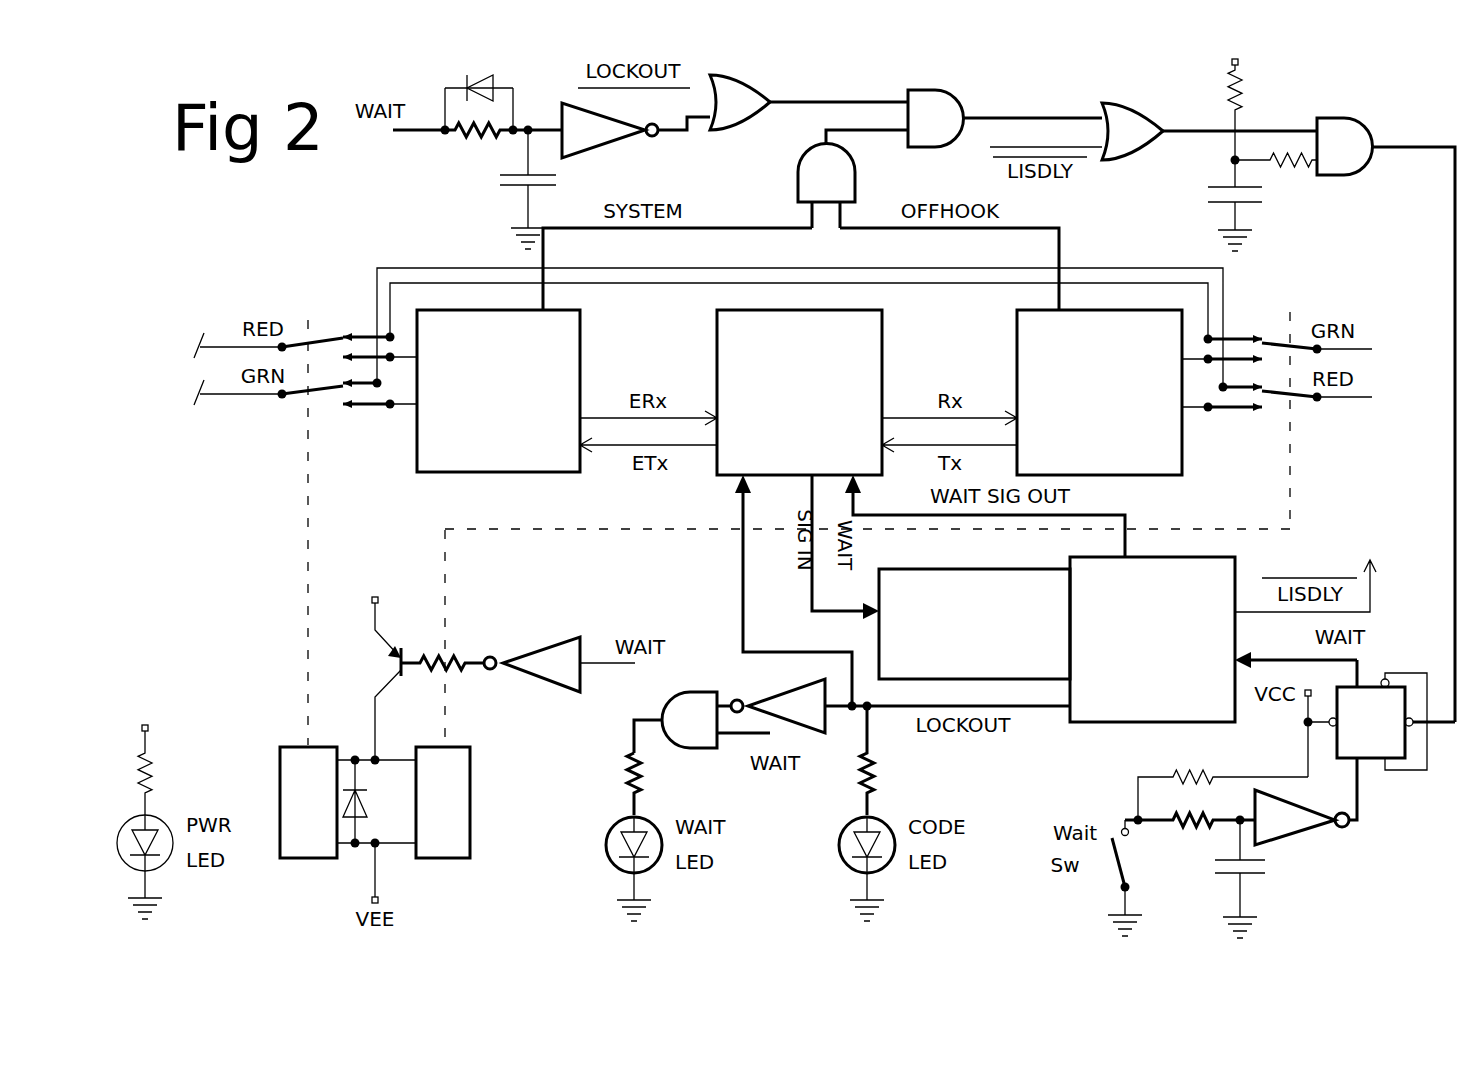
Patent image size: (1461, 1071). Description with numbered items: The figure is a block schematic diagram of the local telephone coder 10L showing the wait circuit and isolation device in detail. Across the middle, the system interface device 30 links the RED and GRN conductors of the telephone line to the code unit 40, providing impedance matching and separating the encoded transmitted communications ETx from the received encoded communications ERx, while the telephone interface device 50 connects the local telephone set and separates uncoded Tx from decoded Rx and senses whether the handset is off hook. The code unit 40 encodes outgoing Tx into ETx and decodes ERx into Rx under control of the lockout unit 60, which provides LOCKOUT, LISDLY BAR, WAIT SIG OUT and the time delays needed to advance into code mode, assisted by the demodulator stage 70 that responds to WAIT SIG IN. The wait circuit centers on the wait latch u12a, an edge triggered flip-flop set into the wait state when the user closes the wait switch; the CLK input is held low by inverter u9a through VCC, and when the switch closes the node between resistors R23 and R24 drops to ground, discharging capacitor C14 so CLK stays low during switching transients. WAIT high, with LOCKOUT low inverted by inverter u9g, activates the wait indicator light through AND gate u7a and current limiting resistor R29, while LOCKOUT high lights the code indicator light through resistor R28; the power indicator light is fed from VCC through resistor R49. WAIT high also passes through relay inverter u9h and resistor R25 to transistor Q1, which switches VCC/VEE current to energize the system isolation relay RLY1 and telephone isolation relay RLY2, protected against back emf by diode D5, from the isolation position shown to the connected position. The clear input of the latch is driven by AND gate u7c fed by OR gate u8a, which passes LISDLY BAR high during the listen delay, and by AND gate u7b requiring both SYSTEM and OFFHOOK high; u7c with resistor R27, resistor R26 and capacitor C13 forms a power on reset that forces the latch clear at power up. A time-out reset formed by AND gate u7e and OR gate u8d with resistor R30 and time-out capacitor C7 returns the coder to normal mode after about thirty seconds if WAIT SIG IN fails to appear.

The local telephone coder 10L is at (219, 244).
The system interface device 30 is at (498, 391).
The code unit 40 is at (799, 392).
The telephone interface device 50 is at (1099, 392).
The lockout unit 60 is at (1152, 639).
The demodulator stage 70 is at (974, 624).
The resistor R30 is at (477, 144).
The time-out capacitor C7 is at (544, 189).
The OR gate u8d is at (740, 102).
The AND gate u7e is at (935, 118).
The AND gate u7b is at (826, 173).
The OR gate u8a is at (1132, 131).
The AND gate u7c is at (1345, 146).
The resistor R27 is at (1229, 105).
The resistor R26 is at (1276, 174).
The capacitor C13 is at (1210, 205).
The current limiting resistor R49 is at (161, 756).
The transistor Q1 is at (371, 661).
The current limiting resistor R25 is at (442, 650).
The relay inverter u9h is at (532, 664).
The system isolation relay RLY1 is at (308, 802).
The telephone isolation relay RLY2 is at (443, 802).
The diode D5 is at (377, 801).
The AND gate u7a is at (689, 720).
The inverter u9g is at (778, 706).
The current limiting resistor R29 is at (657, 784).
The current limiting resistor R28 is at (890, 760).
The wait latch u12a is at (1378, 721).
The inverter u9a is at (1302, 817).
The resistor R24 is at (1190, 834).
The resistor R23 is at (1223, 784).
The capacitor C14 is at (1266, 879).